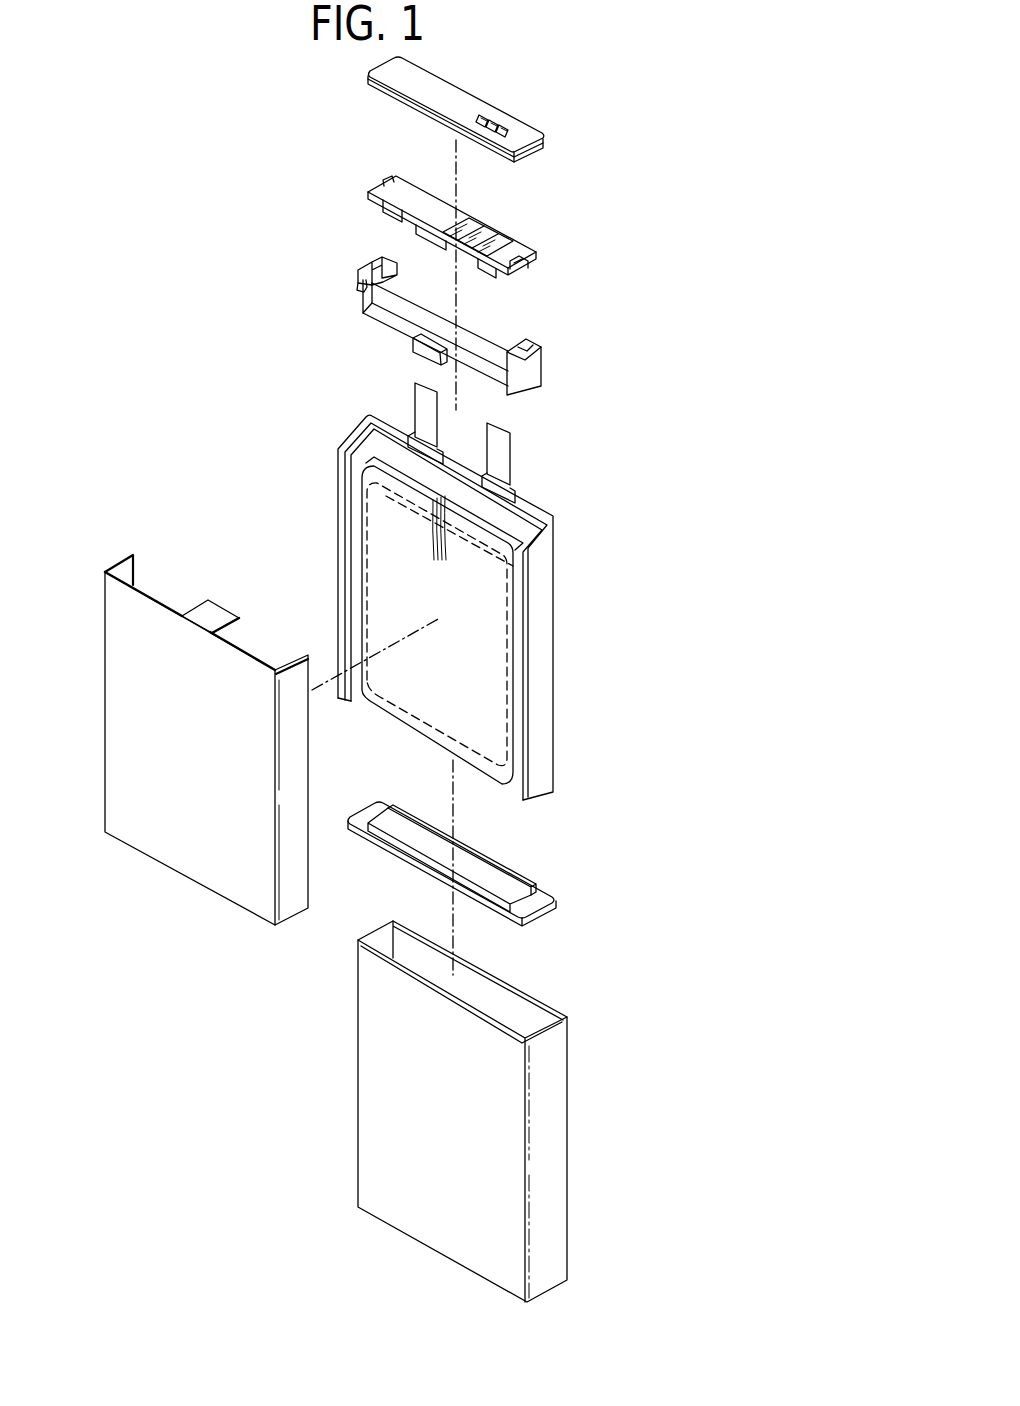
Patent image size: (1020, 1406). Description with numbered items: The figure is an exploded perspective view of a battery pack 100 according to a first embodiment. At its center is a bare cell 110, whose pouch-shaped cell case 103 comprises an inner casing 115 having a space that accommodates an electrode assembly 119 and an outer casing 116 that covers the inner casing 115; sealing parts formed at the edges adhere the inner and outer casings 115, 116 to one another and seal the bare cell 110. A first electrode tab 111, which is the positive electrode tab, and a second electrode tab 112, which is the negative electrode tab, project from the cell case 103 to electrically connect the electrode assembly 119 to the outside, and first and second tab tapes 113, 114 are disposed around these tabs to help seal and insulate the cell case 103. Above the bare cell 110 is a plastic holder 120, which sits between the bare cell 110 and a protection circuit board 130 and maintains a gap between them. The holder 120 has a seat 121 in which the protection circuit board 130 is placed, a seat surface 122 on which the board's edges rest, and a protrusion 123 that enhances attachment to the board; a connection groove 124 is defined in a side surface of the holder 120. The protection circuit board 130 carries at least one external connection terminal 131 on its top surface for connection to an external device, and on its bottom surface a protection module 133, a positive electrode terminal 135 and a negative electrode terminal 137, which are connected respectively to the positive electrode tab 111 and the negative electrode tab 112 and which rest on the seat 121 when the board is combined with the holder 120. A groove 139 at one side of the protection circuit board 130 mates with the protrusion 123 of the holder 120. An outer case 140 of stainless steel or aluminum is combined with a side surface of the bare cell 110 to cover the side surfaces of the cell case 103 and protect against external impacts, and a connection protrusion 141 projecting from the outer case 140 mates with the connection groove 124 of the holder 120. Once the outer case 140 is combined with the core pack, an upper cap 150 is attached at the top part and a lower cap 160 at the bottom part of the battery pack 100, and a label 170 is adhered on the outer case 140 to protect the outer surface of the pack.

The battery pack 100 is at (185, 142).
The cell case 103 is at (657, 487).
The bare cell 110 is at (322, 514).
The first electrode tab 111 is at (418, 400).
The second electrode tab 112 is at (502, 447).
The first tab tape 113 is at (413, 445).
The second tab tape 114 is at (515, 492).
The inner casing 115 is at (520, 523).
The outer casing 116 is at (535, 507).
The electrode assembly 119 is at (490, 697).
The holder 120 is at (352, 306).
The seat 121 is at (505, 320).
The seat surface 122 is at (362, 280).
The protrusion 123 is at (372, 265).
The connection groove 124 is at (425, 343).
The protection circuit board 130 is at (415, 185).
The external connection terminal 131 is at (473, 222).
The protection module 133 is at (424, 238).
The positive electrode terminal 135 is at (383, 216).
The negative electrode terminal 137 is at (482, 270).
The groove 139 is at (512, 257).
The outer case 140 is at (133, 667).
The connection protrusion 141 is at (202, 606).
The upper cap 150 is at (442, 83).
The lower cap 160 is at (528, 903).
The label 170 is at (553, 1062).